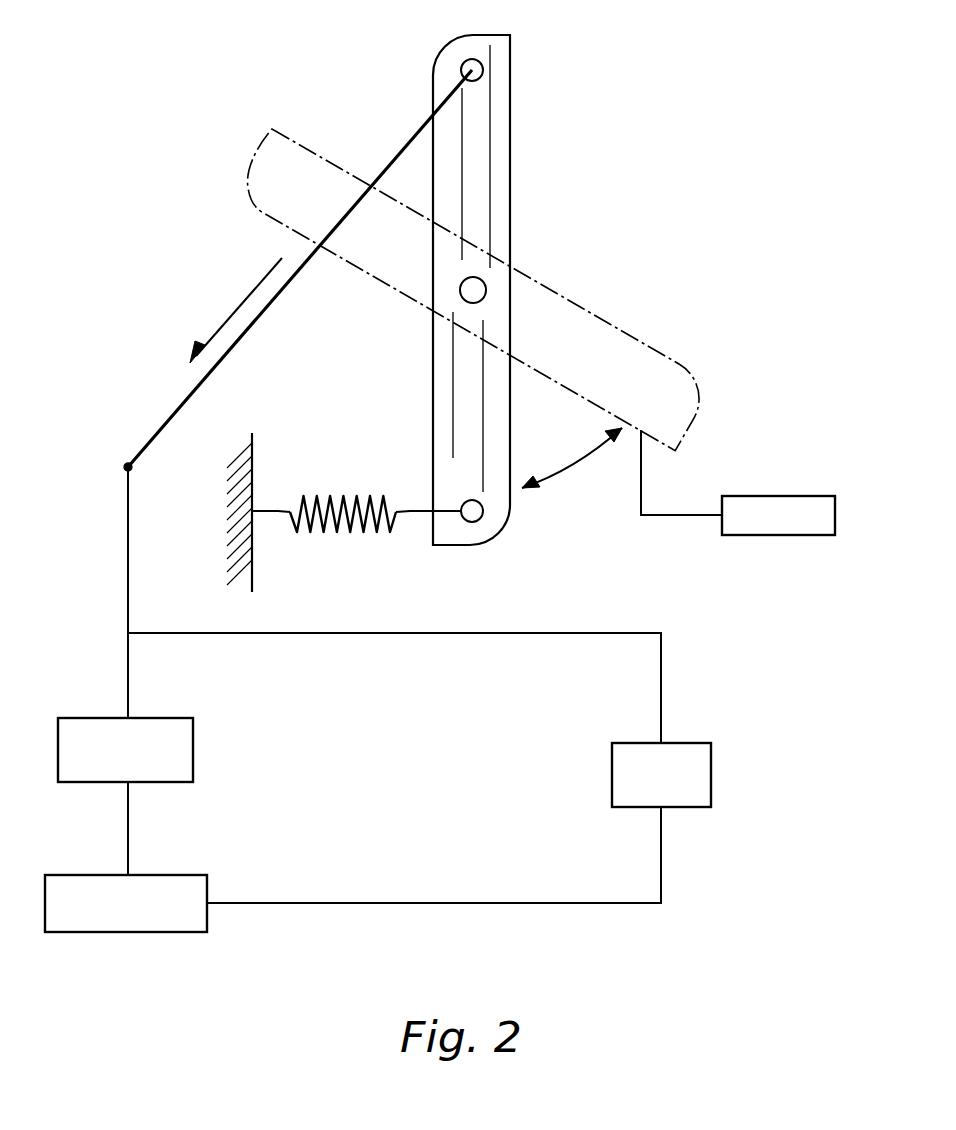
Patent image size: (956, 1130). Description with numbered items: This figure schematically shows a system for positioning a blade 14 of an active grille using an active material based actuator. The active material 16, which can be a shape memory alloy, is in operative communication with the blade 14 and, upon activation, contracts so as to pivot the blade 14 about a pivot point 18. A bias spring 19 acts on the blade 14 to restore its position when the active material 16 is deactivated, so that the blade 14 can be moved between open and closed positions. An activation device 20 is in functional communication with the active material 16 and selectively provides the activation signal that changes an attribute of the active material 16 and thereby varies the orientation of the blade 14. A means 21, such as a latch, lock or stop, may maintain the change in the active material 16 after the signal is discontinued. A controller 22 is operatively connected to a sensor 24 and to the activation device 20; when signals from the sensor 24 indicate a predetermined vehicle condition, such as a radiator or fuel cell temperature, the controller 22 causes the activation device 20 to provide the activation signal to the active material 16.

The blade 14 is at (515, 107).
The active material 16 is at (167, 420).
The pivot point 18 is at (478, 292).
The bias spring 19 is at (356, 497).
The activation device 20 is at (195, 752).
The means to maintain the change in active material 21 is at (783, 535).
The controller 22 is at (138, 932).
The sensor 24 is at (713, 776).